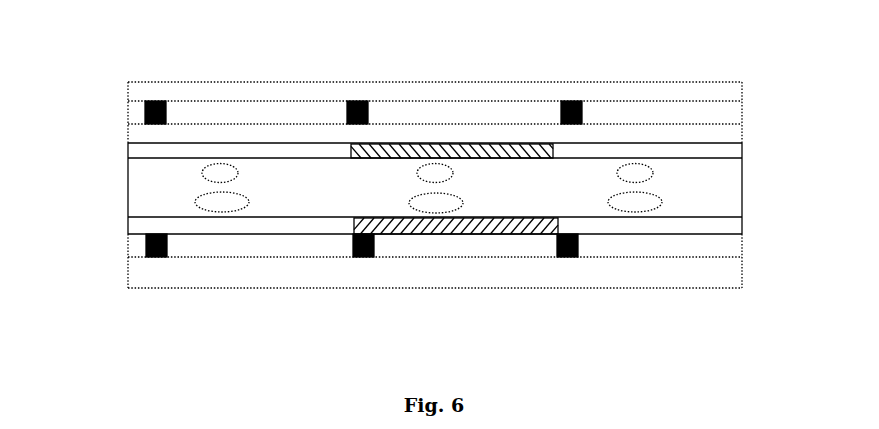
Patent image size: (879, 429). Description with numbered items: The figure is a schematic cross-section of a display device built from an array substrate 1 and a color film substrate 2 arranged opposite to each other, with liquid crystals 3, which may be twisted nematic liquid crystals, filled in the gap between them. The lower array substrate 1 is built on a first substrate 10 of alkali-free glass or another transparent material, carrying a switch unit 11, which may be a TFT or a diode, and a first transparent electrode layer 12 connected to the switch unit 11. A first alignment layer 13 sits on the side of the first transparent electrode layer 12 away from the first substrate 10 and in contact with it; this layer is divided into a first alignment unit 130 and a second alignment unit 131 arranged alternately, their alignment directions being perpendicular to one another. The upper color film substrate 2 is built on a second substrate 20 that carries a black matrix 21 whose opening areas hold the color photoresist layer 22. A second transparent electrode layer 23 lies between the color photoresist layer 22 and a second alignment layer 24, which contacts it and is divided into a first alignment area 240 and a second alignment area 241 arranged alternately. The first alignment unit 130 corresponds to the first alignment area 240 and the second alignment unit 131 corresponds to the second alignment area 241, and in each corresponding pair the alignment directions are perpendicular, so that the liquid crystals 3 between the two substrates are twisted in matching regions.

The array substrate 1 is at (128, 218).
The color film substrate 2 is at (742, 82).
The liquid crystals 3 is at (660, 202).
The first substrate 10 is at (737, 277).
The switch unit 11 is at (563, 257).
The first transparent electrode layer 12 is at (737, 250).
The first alignment layer 13 is at (742, 213).
The second substrate 20 is at (135, 91).
The black matrix 21 is at (162, 102).
The color photoresist layer 22 is at (258, 115).
The second transparent electrode layer 23 is at (137, 132).
The second alignment layer 24 is at (137, 159).
The first alignment unit 130 is at (185, 225).
The second alignment unit 131 is at (435, 233).
The first alignment area 240 is at (643, 148).
The second alignment area 241 is at (430, 148).